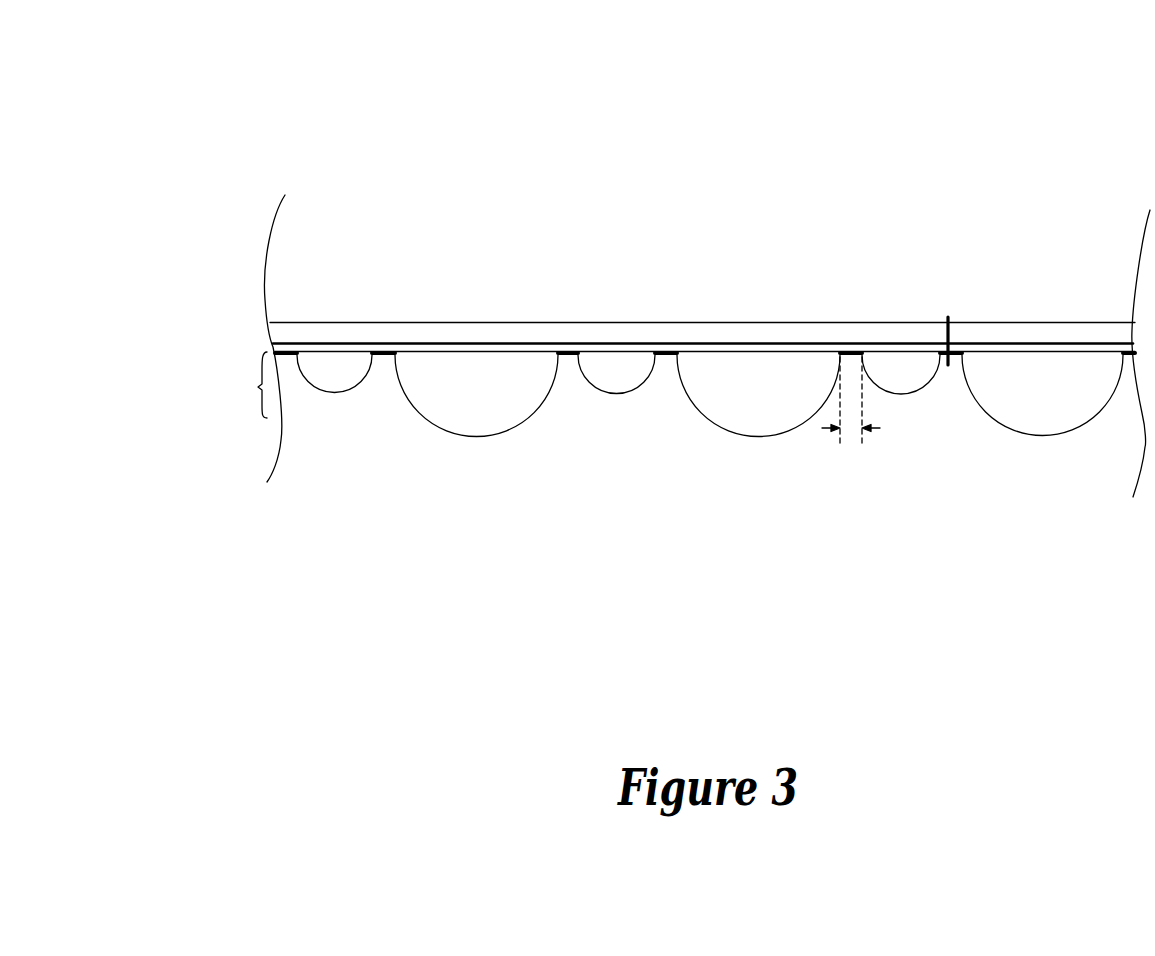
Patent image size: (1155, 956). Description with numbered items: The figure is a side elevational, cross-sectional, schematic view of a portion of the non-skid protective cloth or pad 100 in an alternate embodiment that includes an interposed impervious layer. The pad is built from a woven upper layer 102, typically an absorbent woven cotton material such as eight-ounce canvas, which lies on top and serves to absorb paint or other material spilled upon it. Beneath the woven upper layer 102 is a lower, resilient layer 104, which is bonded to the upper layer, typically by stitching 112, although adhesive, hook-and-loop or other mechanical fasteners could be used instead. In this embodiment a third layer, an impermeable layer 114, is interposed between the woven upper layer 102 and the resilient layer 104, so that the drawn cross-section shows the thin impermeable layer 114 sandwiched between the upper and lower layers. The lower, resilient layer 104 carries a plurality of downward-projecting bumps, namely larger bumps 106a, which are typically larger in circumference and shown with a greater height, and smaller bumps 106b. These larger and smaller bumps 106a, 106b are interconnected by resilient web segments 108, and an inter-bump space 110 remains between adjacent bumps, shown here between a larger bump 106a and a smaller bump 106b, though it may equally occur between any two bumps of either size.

The non-skid protective cloth or pad 100 is at (1078, 157).
The woven upper layer 102 is at (680, 328).
The lower, resilient layer 104 is at (258, 387).
The larger bumps 106a is at (473, 412).
The smaller bumps 106b is at (628, 383).
The resilient web segments 108 is at (385, 355).
The inter-bump space 110 is at (883, 428).
The stitching 112 is at (950, 343).
The impermeable layer 114 is at (903, 348).